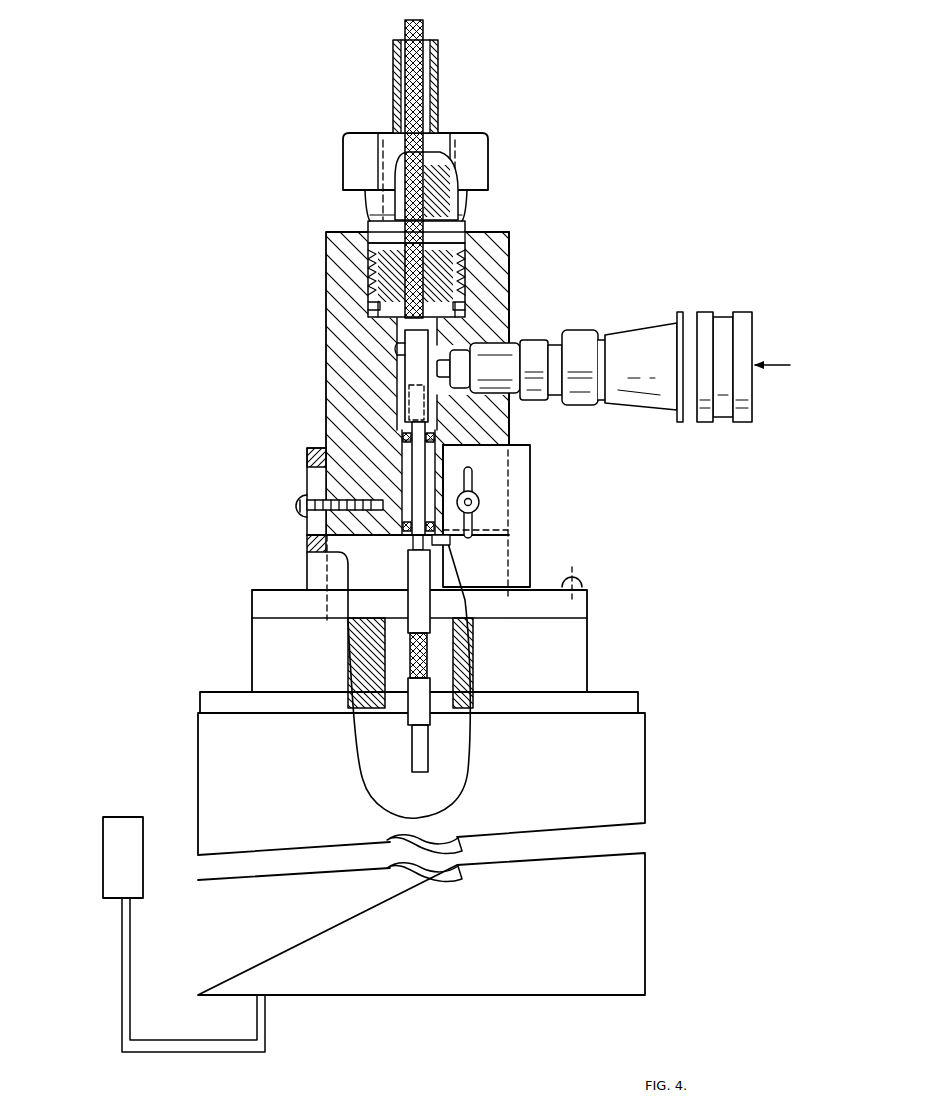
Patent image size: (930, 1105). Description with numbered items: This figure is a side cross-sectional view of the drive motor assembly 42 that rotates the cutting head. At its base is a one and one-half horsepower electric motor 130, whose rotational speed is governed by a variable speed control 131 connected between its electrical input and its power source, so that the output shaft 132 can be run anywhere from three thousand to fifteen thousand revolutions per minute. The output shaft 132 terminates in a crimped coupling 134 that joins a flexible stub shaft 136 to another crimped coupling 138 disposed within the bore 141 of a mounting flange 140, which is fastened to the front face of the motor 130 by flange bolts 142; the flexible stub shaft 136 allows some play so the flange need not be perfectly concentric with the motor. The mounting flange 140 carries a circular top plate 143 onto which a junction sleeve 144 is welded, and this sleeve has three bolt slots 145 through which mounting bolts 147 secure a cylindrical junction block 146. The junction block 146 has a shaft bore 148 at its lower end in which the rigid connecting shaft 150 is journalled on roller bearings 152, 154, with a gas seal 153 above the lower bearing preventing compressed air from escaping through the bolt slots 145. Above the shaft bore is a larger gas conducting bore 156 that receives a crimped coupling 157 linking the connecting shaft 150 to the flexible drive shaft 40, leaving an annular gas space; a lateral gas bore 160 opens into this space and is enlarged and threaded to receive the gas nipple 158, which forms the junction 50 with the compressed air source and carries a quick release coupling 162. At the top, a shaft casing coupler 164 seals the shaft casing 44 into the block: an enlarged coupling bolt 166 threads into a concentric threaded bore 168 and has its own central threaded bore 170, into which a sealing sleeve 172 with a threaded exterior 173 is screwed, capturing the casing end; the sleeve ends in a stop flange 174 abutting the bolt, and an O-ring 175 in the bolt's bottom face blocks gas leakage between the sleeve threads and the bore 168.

The flexible drive shaft 40 is at (405, 32).
The drive motor assembly 42 is at (250, 130).
The shaft casing 44 is at (393, 97).
The junction 50 is at (628, 288).
The electric motor 130 is at (415, 908).
The variable speed control 131 is at (136, 858).
The output shaft 132 is at (430, 752).
The crimped coupling 134 is at (407, 697).
The flexible stub shaft 136 is at (425, 660).
The crimped coupling 138 is at (413, 583).
The mounting flange 140 is at (563, 645).
The bore 141 is at (390, 613).
The flange bolts 142 is at (580, 578).
The circular top plate 143 is at (263, 603).
The junction sleeve 144 is at (530, 532).
The bolt slots 145 is at (307, 485).
The junction block 146 is at (343, 380).
The mounting bolts 147 is at (298, 502).
The shaft bore 148 is at (308, 480).
The rigid connecting shaft 150 is at (417, 463).
The roller bearing 152 is at (440, 533).
The gas seal 153 is at (430, 512).
The roller bearing 154 is at (413, 438).
The gas conducting bore 156 is at (400, 345).
The crimped coupling 157 is at (509, 268).
The gas nipple 158 is at (650, 358).
The lateral gas bore 160 is at (448, 350).
The quick release coupling 162 is at (724, 412).
The shaft casing coupler 164 is at (470, 216).
The coupling bolt 166 is at (475, 160).
The threaded bore 168 is at (465, 262).
The threaded bore 170 is at (370, 222).
The sealing sleeve 172 is at (372, 237).
The threaded exterior 173 is at (470, 226).
The stop flange 174 is at (368, 318).
The O-ring 175 is at (378, 285).